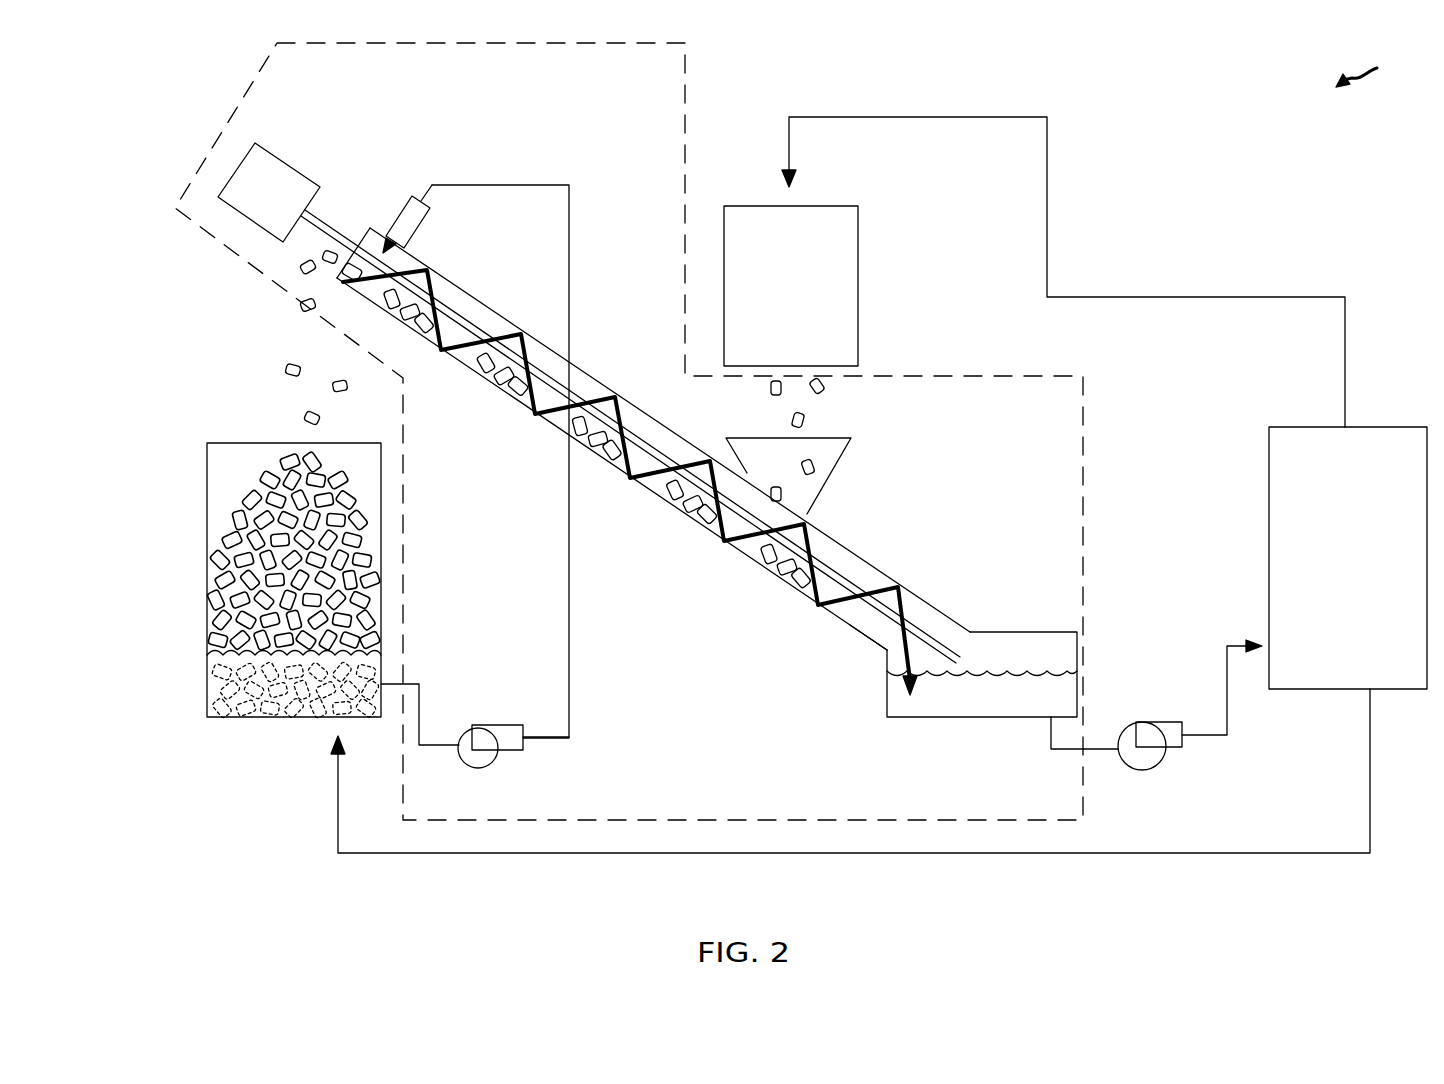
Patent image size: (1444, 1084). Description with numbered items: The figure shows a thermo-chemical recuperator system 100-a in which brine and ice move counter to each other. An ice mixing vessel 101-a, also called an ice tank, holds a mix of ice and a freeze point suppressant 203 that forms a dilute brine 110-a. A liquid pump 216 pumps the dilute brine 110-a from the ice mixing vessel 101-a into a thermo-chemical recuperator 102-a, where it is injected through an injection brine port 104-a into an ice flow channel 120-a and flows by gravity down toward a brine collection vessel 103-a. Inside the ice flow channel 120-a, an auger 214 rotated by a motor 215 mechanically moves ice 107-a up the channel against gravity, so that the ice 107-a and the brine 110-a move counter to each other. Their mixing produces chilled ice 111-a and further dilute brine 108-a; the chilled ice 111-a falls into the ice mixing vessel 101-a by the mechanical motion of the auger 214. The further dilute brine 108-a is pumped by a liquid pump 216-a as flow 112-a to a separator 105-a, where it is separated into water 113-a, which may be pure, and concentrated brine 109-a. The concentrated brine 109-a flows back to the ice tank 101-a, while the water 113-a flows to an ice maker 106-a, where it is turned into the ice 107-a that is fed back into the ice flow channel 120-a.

The thermo-chemical recuperator system 100-a is at (1389, 65).
The ice mixing vessel 101-a is at (228, 632).
The thermo-chemical recuperator 102-a is at (805, 823).
The brine collection vessel 103-a is at (990, 717).
The injection brine port 104-a is at (408, 197).
The separator 105-a is at (1269, 452).
The ice maker 106-a is at (737, 207).
The ice 107-a is at (808, 425).
The further dilute brine 108-a is at (863, 628).
The concentrated brine 109-a is at (570, 855).
The dilute brine 110-a is at (510, 183).
The chilled ice 111-a is at (295, 300).
The flow 112-a is at (1227, 700).
The water 113-a is at (1252, 295).
The ice flow channel 120-a is at (643, 490).
The freeze point suppressant 203 is at (250, 697).
The auger 214 is at (903, 607).
The motor 215 is at (232, 173).
The liquid pump 216 is at (495, 724).
The liquid pump 216-a is at (1157, 722).